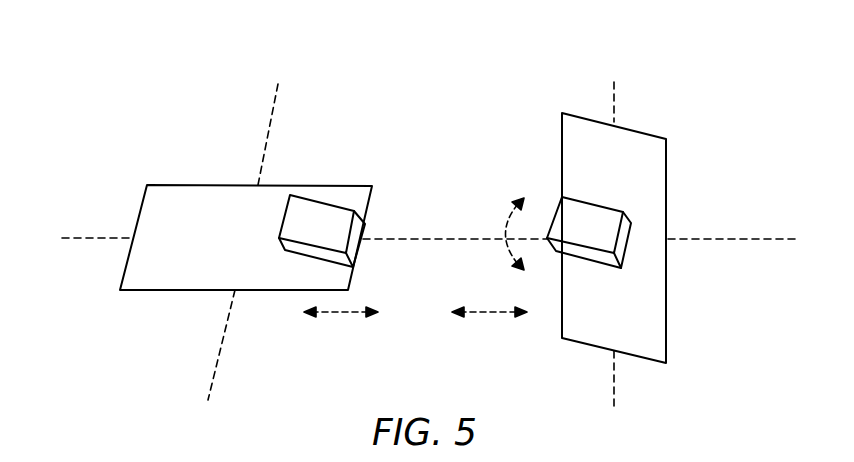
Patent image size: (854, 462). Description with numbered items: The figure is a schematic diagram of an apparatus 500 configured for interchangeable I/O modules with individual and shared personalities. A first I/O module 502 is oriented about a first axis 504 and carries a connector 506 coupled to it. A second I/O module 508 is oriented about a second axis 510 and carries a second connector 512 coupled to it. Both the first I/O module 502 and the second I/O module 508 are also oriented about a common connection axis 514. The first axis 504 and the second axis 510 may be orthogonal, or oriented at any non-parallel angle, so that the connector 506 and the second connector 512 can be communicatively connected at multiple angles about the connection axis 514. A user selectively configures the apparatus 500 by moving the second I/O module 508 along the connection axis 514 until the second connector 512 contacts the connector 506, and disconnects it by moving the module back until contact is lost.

The apparatus 500 is at (101, 118).
The first I/O module 502 is at (180, 185).
The first axis 504 is at (228, 318).
The connector 506 is at (330, 214).
The second I/O module 508 is at (592, 120).
The second axis 510 is at (616, 110).
The second connector 512 is at (562, 198).
The connection axis 514 is at (108, 238).